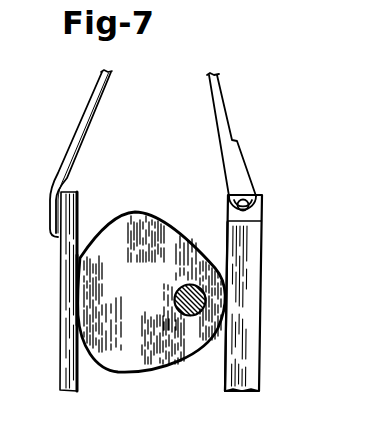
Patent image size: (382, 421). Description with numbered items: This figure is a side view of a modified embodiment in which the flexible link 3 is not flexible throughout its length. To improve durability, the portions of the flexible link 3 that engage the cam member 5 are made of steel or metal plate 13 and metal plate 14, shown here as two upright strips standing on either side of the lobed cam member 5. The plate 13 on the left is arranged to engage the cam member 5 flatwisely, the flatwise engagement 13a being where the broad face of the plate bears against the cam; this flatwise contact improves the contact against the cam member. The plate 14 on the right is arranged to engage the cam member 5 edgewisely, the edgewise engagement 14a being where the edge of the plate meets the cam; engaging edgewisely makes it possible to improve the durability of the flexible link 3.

The flexible link 3 is at (69, 156).
The cam member 5 is at (151, 213).
The metal plate 13 is at (60, 317).
The flatwise engagement 13a is at (80, 257).
The metal plate 14 is at (254, 324).
The edgewise engagement 14a is at (227, 278).